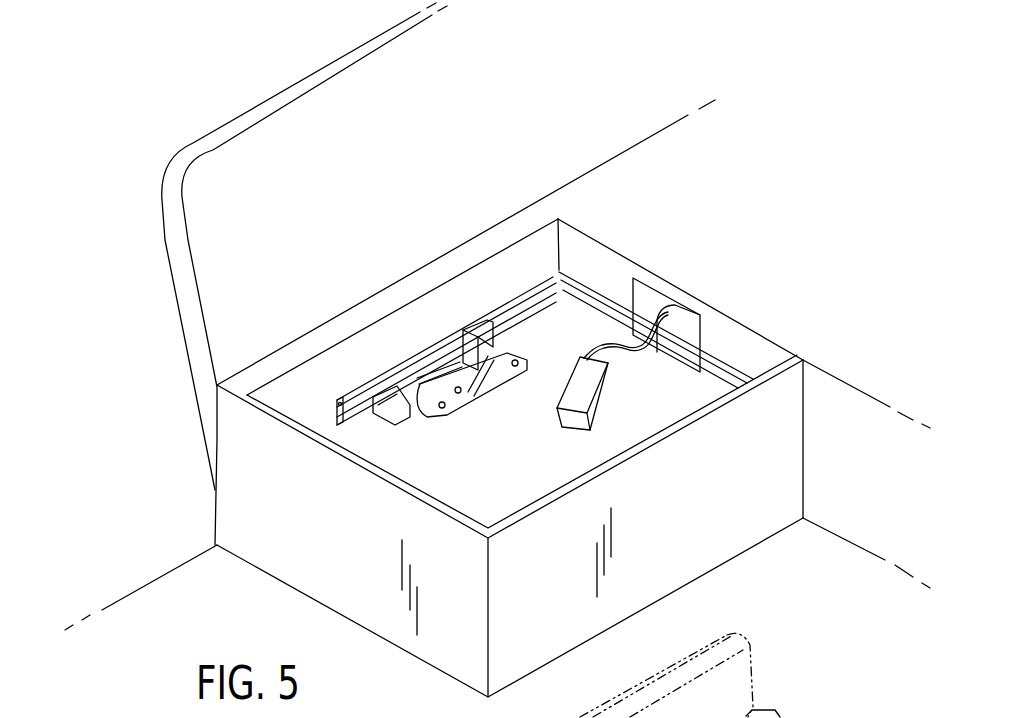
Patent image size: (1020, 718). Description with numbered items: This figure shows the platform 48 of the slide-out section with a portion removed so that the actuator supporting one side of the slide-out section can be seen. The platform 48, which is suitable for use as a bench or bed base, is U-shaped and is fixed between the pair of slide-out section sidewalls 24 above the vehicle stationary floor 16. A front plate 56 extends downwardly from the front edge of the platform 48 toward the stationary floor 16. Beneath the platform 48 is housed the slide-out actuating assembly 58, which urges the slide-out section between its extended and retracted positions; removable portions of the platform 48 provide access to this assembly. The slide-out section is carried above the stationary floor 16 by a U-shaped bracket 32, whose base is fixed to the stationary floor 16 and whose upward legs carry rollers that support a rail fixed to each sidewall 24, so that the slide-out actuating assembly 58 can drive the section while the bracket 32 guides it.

The stationary floor 16 is at (502, 502).
The sidewalls 24 is at (354, 383).
The U-shaped bracket 32 is at (460, 410).
The platform 48 is at (782, 272).
The front plate 56 is at (370, 541).
The slide-out actuating assembly 58 is at (545, 346).